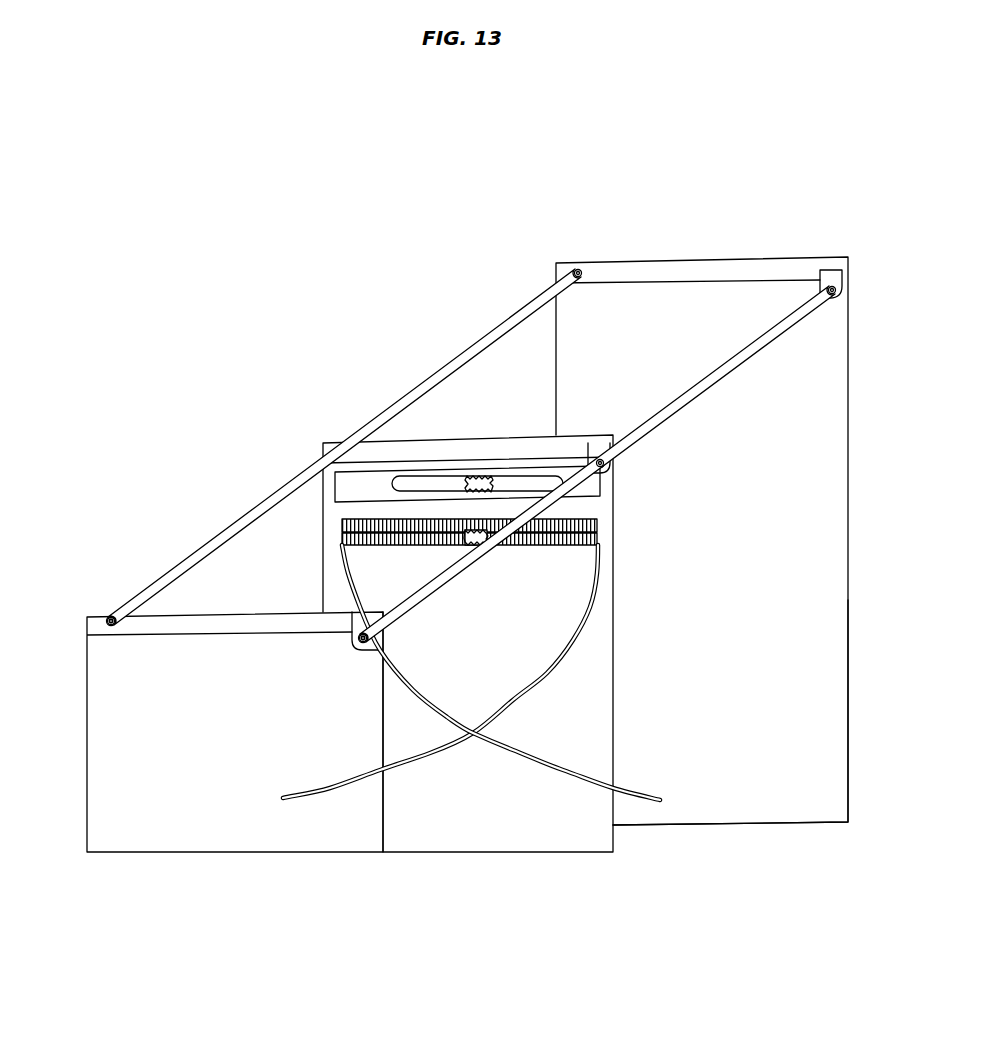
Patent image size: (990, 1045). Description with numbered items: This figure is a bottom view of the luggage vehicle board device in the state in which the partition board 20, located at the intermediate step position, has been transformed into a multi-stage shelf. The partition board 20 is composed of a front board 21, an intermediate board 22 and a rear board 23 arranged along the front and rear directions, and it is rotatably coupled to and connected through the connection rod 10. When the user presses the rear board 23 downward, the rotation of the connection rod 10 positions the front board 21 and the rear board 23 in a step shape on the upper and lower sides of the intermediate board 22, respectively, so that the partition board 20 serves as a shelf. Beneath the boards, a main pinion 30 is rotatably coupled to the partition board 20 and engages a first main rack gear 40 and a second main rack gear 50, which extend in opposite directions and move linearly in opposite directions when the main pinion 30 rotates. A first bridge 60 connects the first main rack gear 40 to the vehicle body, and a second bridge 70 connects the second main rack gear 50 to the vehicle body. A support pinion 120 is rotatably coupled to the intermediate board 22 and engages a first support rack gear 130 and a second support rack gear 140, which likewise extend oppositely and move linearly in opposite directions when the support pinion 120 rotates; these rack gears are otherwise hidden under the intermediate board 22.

The connection rod 10 is at (705, 380).
The partition board 20 is at (860, 743).
The front board 21 is at (837, 688).
The intermediate board 22 is at (485, 845).
The rear board 23 is at (182, 838).
The main pinion 30 is at (474, 545).
The first main rack gear 40 is at (368, 523).
The second main rack gear 50 is at (553, 545).
The first bridge 60 is at (330, 787).
The second bridge 70 is at (590, 788).
The support pinion 120 is at (478, 473).
The first support rack gear 130 is at (592, 490).
The second support rack gear 140 is at (367, 488).